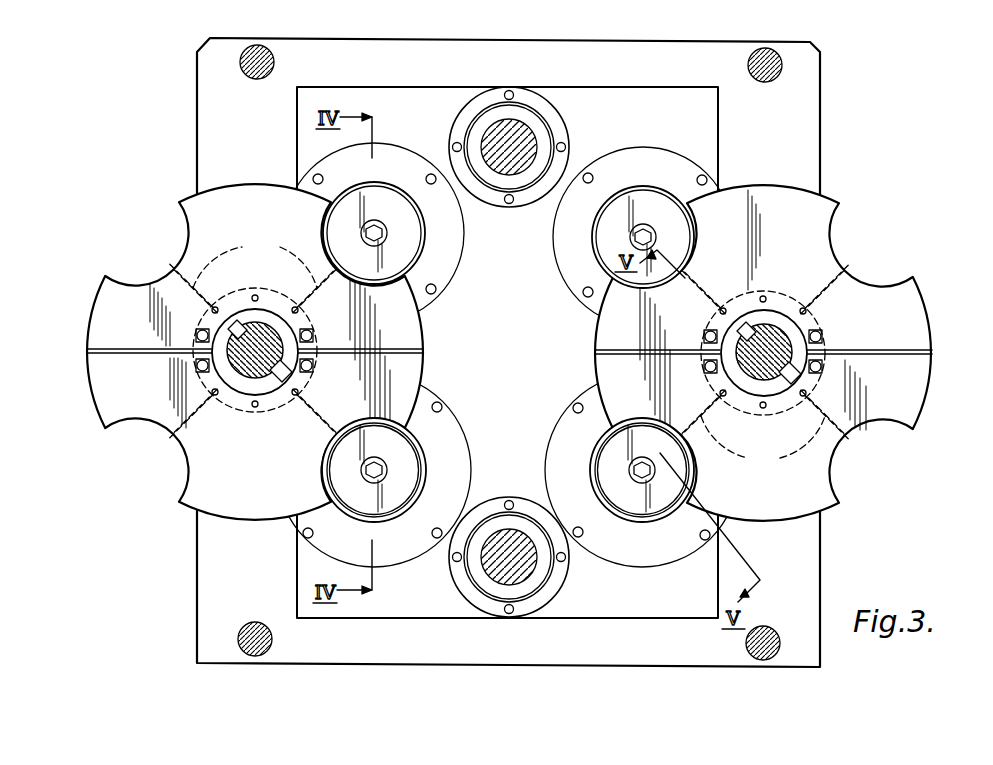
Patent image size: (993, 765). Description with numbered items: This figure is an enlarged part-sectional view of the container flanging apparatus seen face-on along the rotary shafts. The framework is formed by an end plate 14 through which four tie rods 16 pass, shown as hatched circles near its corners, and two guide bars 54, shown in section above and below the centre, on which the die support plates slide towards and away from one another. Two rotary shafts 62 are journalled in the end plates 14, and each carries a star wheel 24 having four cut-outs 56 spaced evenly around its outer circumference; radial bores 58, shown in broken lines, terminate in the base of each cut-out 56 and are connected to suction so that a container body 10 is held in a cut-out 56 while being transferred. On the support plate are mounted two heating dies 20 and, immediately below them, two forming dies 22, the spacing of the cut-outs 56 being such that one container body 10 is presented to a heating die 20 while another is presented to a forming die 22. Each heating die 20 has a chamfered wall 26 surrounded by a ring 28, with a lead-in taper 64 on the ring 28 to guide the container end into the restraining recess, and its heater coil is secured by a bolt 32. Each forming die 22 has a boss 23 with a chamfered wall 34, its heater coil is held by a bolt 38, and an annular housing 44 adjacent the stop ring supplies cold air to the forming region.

The container body 10 is at (719, 188).
The end plates 14 is at (815, 102).
The tie rods 16 is at (240, 62).
The heating dies 20 is at (383, 192).
The forming dies 22 is at (398, 481).
The boss 23 is at (343, 484).
The star wheels 24 is at (93, 313).
The chamfered wall 26 is at (303, 182).
The ring 28 is at (330, 167).
The bolt 32 is at (389, 233).
The chamfered wall 34 is at (412, 494).
The bolt 38 is at (386, 465).
The annular housing 44 is at (462, 455).
The guide bars 54 is at (533, 140).
The cut-outs 56 is at (692, 220).
The radial bores 58 is at (822, 292).
The rotary shafts 62 is at (272, 378).
The lead-in taper 64 is at (722, 314).